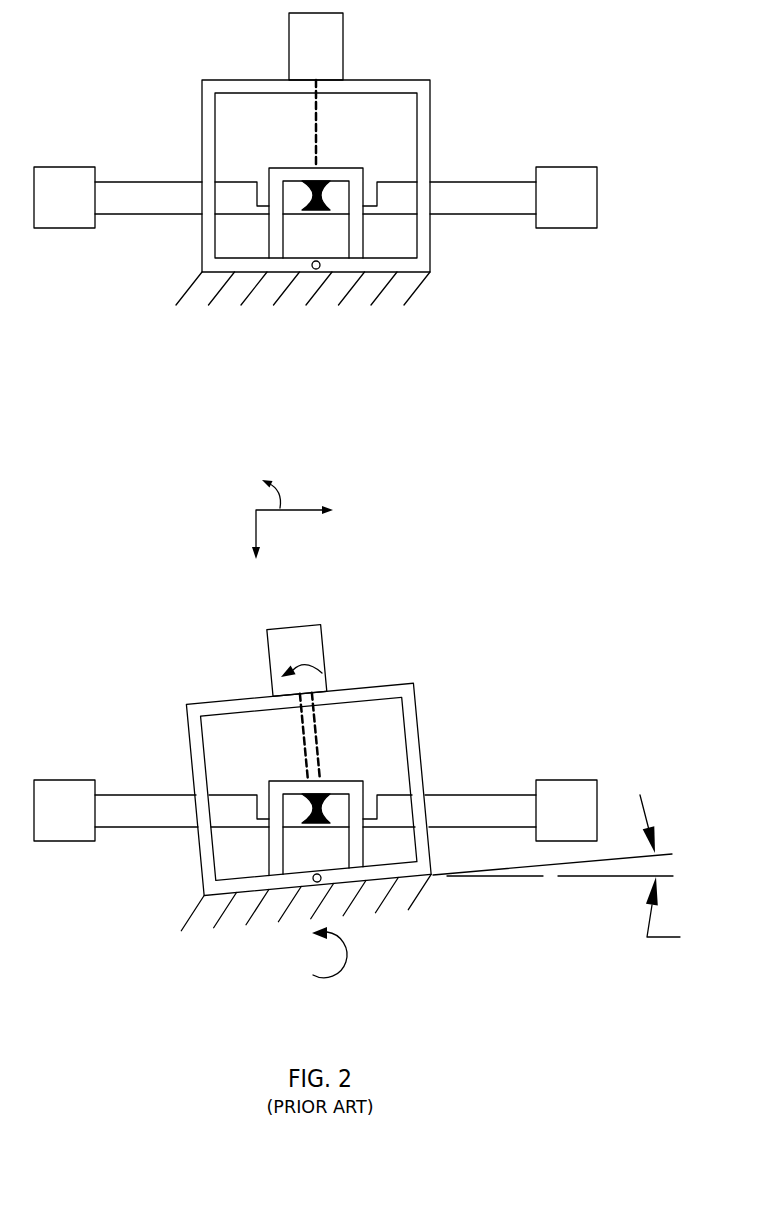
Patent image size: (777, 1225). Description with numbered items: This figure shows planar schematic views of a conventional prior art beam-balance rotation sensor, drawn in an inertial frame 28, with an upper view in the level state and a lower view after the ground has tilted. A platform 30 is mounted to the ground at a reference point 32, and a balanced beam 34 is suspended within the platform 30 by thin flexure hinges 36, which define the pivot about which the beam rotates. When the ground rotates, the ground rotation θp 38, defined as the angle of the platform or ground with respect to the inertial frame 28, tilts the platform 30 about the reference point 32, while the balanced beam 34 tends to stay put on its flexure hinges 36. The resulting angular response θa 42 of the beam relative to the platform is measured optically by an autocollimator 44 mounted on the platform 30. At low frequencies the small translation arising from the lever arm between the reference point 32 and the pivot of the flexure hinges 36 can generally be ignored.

The inertial frame 28 is at (310, 442).
The platform 30 is at (210, 252).
The reference point 32 is at (318, 270).
The balanced beam 34 is at (480, 193).
The flexure hinges 36 is at (318, 199).
The ground rotation θp 38 is at (685, 950).
The angular response θa 42 is at (350, 662).
The autocollimator 44 is at (317, 47).